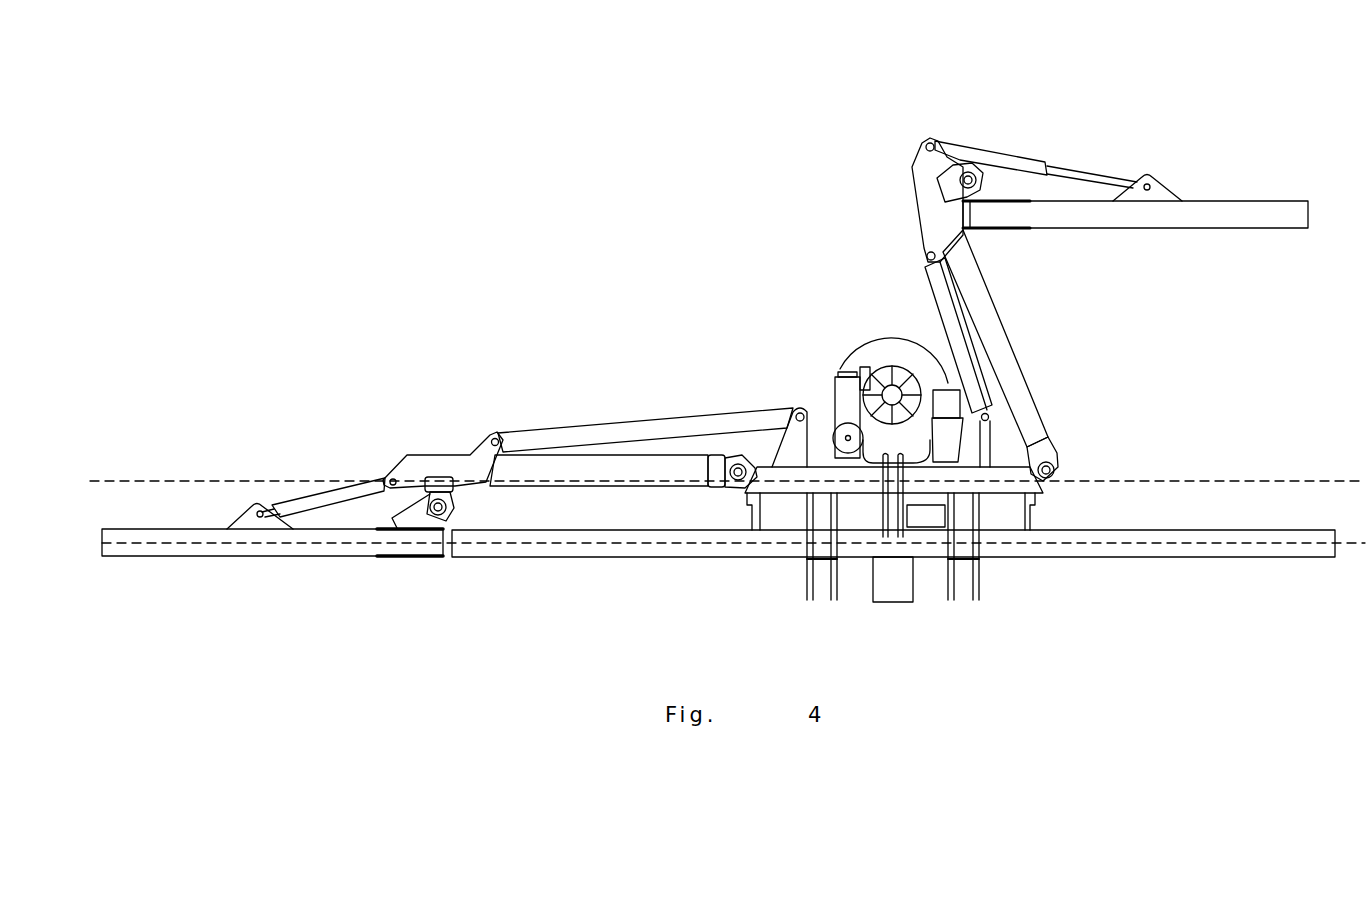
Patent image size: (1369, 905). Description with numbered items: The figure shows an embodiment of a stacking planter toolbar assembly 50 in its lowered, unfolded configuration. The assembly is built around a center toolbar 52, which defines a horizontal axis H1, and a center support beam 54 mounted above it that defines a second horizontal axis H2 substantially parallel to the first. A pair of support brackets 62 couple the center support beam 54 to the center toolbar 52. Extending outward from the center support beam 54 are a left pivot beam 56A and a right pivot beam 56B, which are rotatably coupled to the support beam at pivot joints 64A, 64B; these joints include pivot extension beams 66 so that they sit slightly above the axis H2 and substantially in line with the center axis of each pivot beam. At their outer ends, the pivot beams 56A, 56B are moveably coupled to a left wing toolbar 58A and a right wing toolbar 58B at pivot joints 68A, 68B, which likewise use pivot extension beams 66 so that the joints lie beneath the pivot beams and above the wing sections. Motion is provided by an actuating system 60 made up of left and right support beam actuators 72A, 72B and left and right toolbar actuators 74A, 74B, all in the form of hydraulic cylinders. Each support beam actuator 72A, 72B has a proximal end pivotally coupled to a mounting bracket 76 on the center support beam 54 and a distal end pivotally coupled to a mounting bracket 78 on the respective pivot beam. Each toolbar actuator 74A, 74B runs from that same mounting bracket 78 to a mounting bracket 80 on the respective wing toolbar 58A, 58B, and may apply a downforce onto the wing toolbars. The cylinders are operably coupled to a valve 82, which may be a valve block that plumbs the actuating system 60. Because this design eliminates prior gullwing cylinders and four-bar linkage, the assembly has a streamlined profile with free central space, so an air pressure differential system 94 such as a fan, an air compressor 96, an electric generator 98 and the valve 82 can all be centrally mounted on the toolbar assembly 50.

The stacking planter toolbar assembly 50 is at (404, 371).
The center toolbar 52 is at (1208, 553).
The center support beam 54 is at (786, 493).
The left pivot beam 56A is at (537, 470).
The right pivot beam 56B is at (1018, 377).
The left wing toolbar 58A is at (202, 555).
The right wing toolbar 58B is at (1253, 220).
The actuating system 60 is at (655, 390).
The support brackets 62 is at (978, 590).
The pivot joint 64A is at (724, 502).
The pivot joint 64B is at (1072, 489).
The pivot extension beam 66 is at (1045, 440).
The pivot joint 68A is at (464, 526).
The pivot joint 68B is at (986, 134).
The left support beam actuator 72A is at (590, 432).
The right support beam actuator 72B is at (937, 293).
The left toolbar actuator 74A is at (335, 492).
The right toolbar actuator 74B is at (1020, 160).
The mounting bracket 76 is at (795, 406).
The mounting bracket 78 is at (440, 462).
The mounting bracket 80 is at (248, 513).
The valve 82 is at (928, 520).
The air pressure differential system 94 is at (853, 350).
The air compressor 96 is at (847, 405).
The electric generator 98 is at (940, 405).
The horizontal axis H1 is at (733, 581).
The second horizontal axis H2 is at (727, 454).